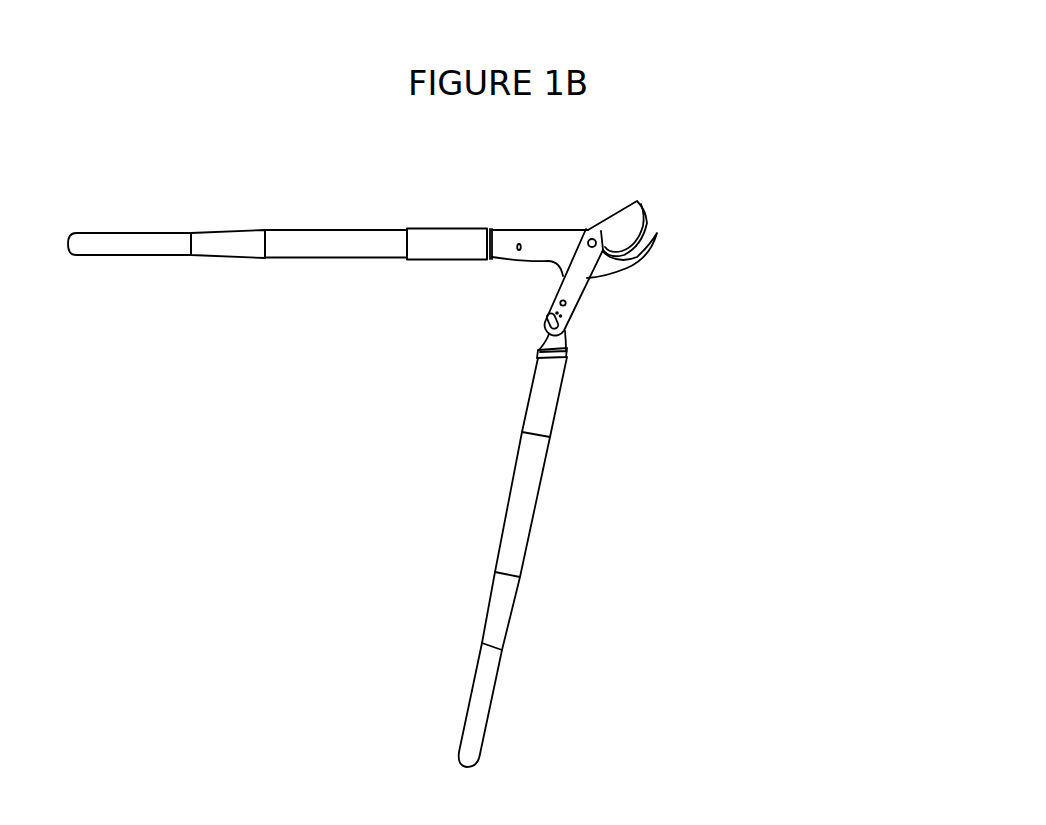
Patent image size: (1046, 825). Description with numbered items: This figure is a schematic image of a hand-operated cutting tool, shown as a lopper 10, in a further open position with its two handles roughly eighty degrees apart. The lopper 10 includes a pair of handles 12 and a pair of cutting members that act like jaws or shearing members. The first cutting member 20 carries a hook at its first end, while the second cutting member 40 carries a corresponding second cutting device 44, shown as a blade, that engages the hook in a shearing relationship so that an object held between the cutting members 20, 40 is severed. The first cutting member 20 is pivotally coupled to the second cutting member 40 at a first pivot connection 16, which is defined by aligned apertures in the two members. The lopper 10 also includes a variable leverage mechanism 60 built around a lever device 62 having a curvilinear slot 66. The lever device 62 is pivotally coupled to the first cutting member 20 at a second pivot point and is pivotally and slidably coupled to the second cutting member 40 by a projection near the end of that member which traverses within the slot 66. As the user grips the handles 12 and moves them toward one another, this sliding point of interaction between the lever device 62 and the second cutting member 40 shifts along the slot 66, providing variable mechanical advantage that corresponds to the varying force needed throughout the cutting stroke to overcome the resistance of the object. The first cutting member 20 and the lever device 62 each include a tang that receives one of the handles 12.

The lopper 10 is at (814, 123).
The handles 12 is at (166, 242).
The first pivot connection 16 is at (591, 237).
The first cutting member 20 is at (644, 263).
The second cutting member 40 is at (636, 200).
The second cutting device 44 is at (639, 218).
The variable leverage mechanism 60 is at (416, 349).
The lever device 62 is at (568, 341).
The curvilinear slot 66 is at (543, 330).